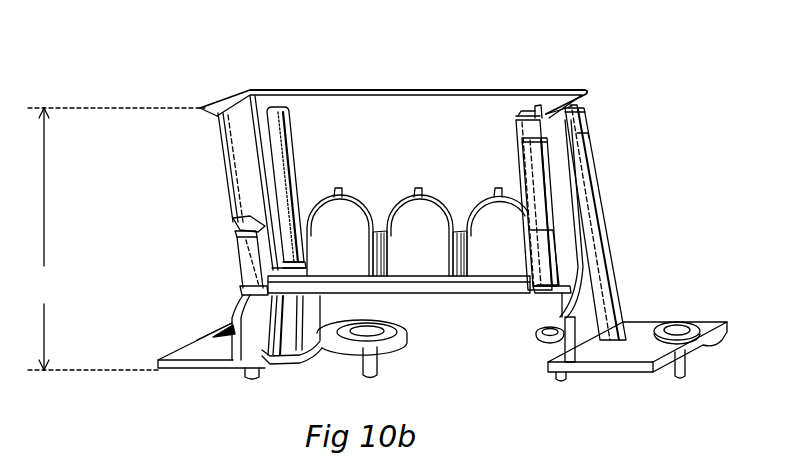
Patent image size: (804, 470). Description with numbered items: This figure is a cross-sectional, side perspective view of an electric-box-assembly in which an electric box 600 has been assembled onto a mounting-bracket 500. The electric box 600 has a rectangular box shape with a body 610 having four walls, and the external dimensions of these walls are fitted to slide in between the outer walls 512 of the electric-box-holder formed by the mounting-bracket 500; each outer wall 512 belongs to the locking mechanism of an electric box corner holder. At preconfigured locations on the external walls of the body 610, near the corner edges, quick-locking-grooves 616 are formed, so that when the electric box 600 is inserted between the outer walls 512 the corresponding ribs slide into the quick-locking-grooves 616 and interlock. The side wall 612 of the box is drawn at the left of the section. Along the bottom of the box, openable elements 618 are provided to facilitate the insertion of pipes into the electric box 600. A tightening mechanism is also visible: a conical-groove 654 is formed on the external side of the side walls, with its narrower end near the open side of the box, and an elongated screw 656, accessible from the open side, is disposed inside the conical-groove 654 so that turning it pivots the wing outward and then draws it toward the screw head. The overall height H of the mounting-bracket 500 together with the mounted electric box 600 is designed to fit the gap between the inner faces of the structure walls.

The body 610 is at (410, 118).
The left side wall 612 is at (233, 94).
The quick-locking-groove 616 is at (278, 140).
The openable element 618 is at (507, 267).
The conical-groove 654 is at (547, 175).
The elongated screw 656 is at (520, 113).
The outer wall 512 is at (593, 300).
The electric box 600 is at (141, 108).
The mounting-bracket 500 is at (141, 288).
The height H is at (116, 239).